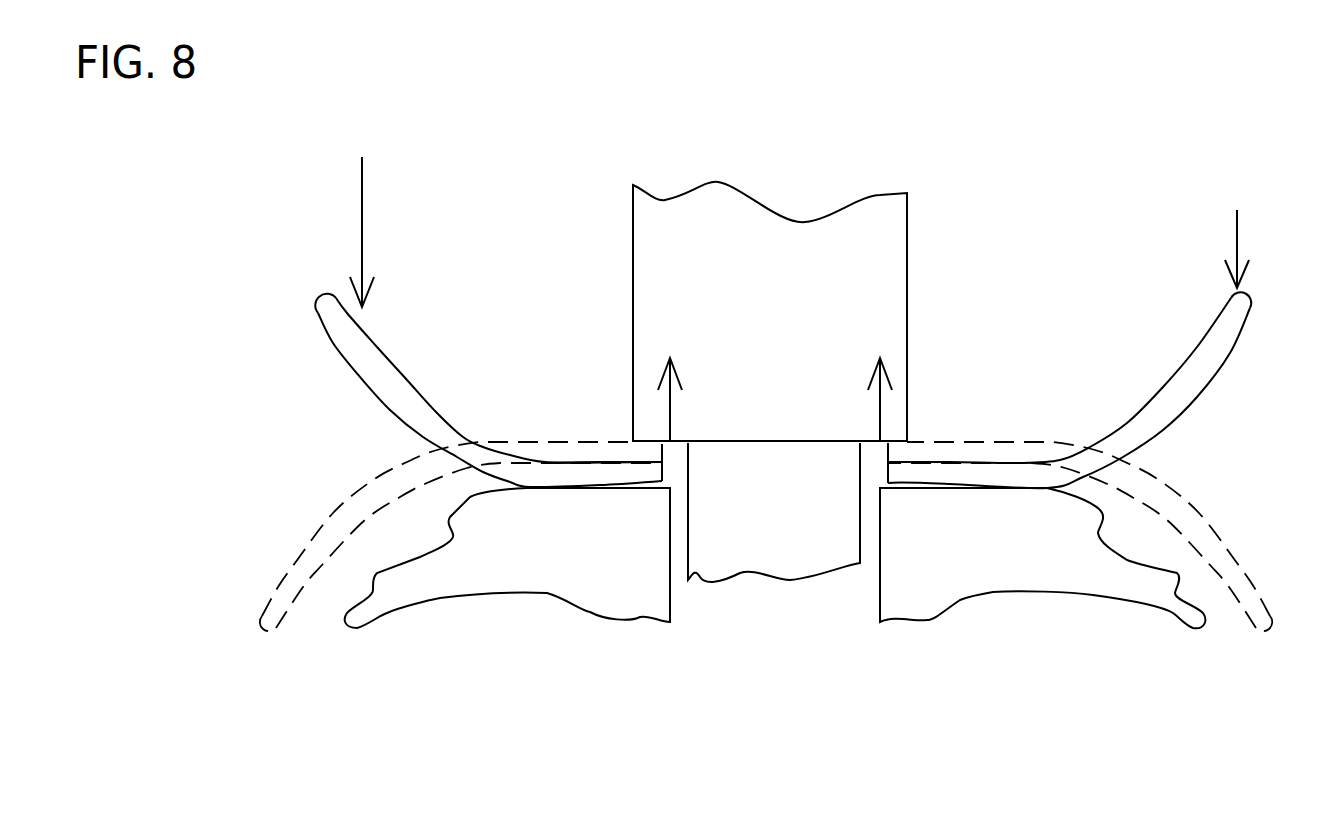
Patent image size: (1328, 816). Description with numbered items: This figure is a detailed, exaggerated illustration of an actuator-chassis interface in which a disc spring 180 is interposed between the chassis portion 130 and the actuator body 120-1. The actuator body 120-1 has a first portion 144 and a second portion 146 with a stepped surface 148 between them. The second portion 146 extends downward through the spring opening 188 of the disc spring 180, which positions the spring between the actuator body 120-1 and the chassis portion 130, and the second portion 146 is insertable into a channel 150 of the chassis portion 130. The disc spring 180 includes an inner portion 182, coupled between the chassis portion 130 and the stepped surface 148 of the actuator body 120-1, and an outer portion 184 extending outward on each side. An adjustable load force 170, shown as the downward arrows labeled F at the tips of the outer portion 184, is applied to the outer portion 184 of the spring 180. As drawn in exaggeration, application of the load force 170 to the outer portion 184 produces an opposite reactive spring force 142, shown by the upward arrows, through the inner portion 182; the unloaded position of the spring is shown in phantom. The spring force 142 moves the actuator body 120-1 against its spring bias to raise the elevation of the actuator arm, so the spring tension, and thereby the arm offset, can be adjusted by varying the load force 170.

The actuator body 120-1 is at (932, 326).
The first portion 144 is at (813, 317).
The second portion 146 is at (787, 557).
The spring force 142 is at (880, 407).
The stepped surface 148 is at (896, 441).
The spring opening 188 is at (677, 452).
The chassis portion 130 is at (1186, 619).
The channel 150 is at (878, 583).
The disc spring 180 is at (472, 412).
The outer portion 184 is at (363, 338).
The inner portion 182 is at (622, 472).
The load force 170 is at (363, 228).